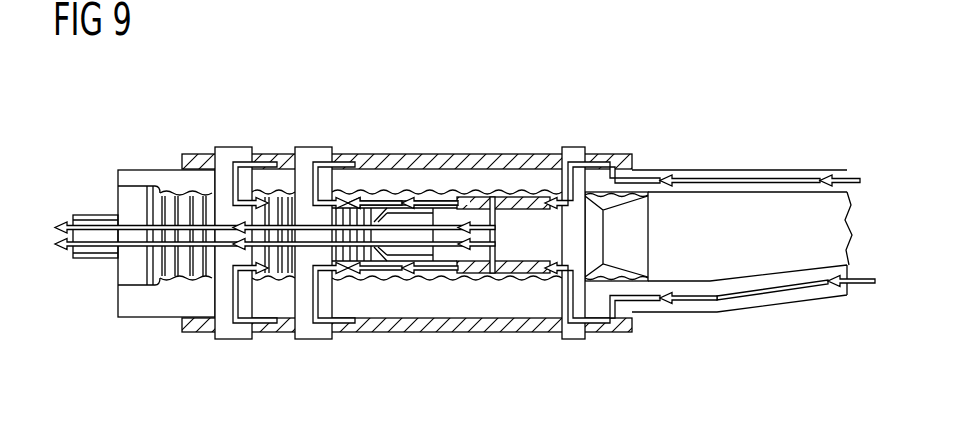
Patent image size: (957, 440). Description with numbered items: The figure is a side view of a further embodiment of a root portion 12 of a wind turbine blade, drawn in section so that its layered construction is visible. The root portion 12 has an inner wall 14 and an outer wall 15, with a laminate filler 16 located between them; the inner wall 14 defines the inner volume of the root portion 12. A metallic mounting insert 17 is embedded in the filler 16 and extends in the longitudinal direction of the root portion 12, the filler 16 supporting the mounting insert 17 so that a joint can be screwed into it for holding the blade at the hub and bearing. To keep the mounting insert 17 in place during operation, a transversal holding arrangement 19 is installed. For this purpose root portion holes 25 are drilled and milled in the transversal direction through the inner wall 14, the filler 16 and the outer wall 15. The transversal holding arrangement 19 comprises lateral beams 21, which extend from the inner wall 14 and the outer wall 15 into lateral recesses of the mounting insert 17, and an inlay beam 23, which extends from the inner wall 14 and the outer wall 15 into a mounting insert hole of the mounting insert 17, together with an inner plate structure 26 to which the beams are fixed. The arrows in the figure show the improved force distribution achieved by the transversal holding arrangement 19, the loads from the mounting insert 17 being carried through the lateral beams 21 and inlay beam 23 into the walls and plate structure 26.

The root portion 12 is at (465, 231).
The inner wall 14 is at (661, 308).
The outer wall 15 is at (729, 170).
The laminate filler 16 is at (789, 200).
The mounting insert 17 is at (135, 197).
The transversal holding arrangement 19 is at (252, 360).
The lateral beam 21 is at (229, 152).
The inlay beam 23 is at (571, 154).
The root portion hole 25 is at (405, 163).
The inner plate structure 26 is at (428, 324).